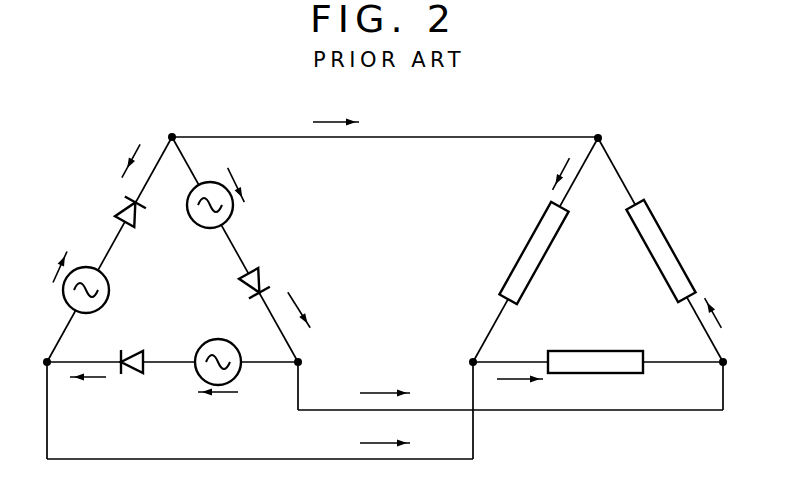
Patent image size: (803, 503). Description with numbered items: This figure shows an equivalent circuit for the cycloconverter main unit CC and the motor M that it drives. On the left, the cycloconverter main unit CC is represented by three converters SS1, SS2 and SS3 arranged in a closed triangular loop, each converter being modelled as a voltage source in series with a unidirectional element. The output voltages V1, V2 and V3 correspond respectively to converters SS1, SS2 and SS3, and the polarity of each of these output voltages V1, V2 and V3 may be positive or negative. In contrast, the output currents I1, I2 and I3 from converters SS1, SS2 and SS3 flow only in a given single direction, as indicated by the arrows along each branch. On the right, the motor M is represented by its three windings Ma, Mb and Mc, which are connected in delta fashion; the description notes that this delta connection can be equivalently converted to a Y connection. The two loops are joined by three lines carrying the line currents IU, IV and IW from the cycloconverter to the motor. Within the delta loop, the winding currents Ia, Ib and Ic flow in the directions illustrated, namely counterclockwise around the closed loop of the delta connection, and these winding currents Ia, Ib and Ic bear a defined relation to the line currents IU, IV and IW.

The cycloconverter main unit CC is at (205, 101).
The motor M is at (583, 115).
The converter SS1 is at (112, 211).
The converter SS2 is at (131, 348).
The converter SS3 is at (232, 286).
The output voltage V1 is at (72, 281).
The output voltage V2 is at (218, 379).
The output voltage V3 is at (226, 197).
The motor winding Ma is at (529, 253).
The motor winding Mb is at (595, 349).
The motor winding Mc is at (666, 251).
The output current I1 is at (125, 161).
The output current I2 is at (88, 391).
The output current I3 is at (303, 309).
The line current IU is at (336, 112).
The line current IV is at (385, 433).
The line current IW is at (385, 382).
The motor winding current Ia is at (554, 174).
The motor winding current Ib is at (520, 392).
The motor winding current Ic is at (718, 312).